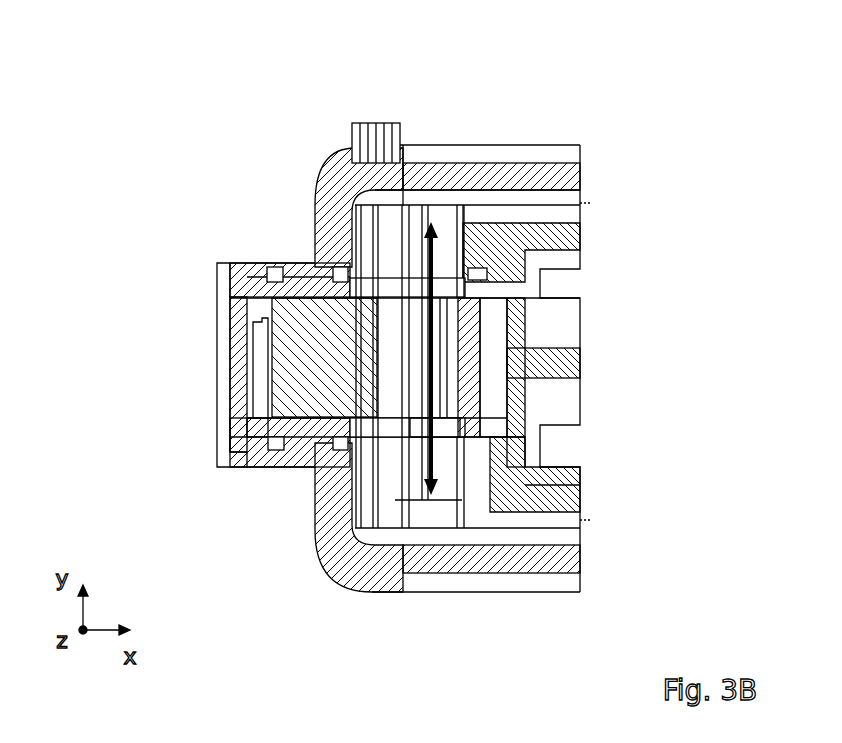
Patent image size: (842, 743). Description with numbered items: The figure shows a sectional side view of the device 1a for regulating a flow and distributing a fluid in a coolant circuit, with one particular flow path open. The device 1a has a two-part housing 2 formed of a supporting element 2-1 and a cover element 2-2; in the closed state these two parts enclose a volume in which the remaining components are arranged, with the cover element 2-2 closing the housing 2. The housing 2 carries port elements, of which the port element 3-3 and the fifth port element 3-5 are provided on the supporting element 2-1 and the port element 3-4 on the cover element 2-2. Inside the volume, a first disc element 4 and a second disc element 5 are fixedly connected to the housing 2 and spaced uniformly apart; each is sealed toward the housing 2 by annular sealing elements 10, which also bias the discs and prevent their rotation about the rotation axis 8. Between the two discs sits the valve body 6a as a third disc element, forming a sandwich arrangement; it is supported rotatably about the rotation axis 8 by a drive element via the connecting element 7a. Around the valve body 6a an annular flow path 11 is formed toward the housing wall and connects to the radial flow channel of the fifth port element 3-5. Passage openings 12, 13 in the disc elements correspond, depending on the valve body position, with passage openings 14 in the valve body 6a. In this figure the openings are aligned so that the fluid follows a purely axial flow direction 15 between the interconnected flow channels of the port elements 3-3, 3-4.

The device 1a is at (630, 136).
The housing 2 is at (306, 141).
The supporting element 2-1 is at (332, 218).
The cover element 2-2 is at (505, 563).
The port element 3-3 is at (565, 198).
The port element 3-4 is at (565, 538).
The fifth port element 3-5 is at (553, 403).
The first disc element 4 is at (258, 288).
The second disc element 5 is at (252, 427).
The valve body 6a is at (290, 370).
The connecting element 7a is at (380, 140).
The rotation axis 8 is at (377, 498).
The sealing elements 10 is at (337, 270).
The flow path 11 is at (253, 385).
The passage opening 12 is at (445, 292).
The passage opening 13 is at (442, 425).
The passage openings 14 is at (447, 380).
The flow direction 15 is at (437, 226).